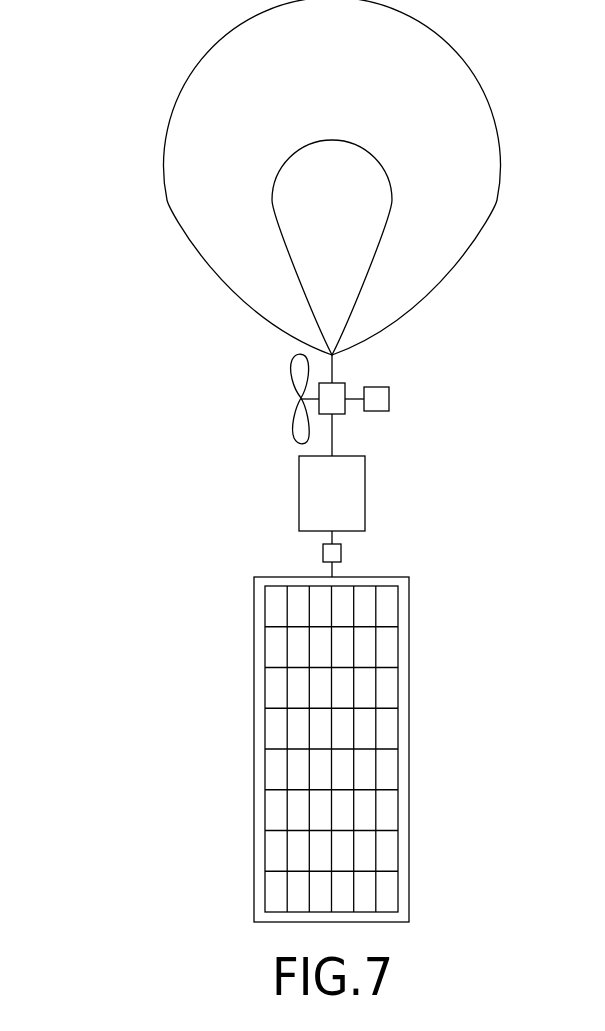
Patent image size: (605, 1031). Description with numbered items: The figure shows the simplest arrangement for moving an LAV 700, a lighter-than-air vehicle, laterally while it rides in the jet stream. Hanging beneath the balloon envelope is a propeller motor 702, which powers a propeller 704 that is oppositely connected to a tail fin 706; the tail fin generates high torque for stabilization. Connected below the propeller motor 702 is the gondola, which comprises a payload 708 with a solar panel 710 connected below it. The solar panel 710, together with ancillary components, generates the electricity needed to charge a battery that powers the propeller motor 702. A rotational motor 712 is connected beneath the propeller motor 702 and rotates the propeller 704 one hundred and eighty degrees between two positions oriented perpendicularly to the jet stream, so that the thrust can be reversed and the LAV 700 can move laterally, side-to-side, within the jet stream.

The LAV 700 is at (126, 106).
The propeller motor 702 is at (334, 393).
The propeller 704 is at (296, 429).
The tail fin 706 is at (389, 397).
The payload 708 is at (341, 553).
The solar panel 710 is at (448, 754).
The rotational motor 712 is at (312, 493).